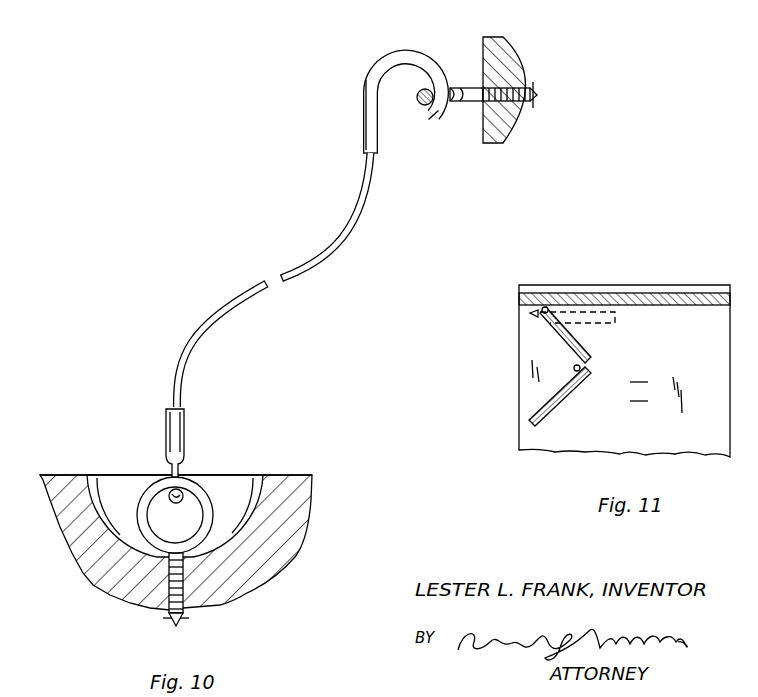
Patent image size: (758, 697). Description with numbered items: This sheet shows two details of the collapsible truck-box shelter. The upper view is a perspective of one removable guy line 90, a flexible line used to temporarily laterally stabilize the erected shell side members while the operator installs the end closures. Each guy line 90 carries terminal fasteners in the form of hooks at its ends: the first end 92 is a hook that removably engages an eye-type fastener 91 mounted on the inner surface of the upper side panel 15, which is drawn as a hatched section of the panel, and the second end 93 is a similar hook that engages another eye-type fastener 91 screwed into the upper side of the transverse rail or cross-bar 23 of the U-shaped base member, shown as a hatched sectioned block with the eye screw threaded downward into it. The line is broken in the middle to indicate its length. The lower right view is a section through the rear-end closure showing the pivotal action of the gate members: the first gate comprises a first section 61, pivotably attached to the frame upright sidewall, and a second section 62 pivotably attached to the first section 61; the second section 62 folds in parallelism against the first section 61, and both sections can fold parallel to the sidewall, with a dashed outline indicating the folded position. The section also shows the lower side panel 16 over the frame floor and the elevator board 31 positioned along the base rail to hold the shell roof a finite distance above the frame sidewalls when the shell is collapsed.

In FIG. 10, the upper side panel 15 is at (483, 41).
In FIG. 11, the lower side panel 16 is at (702, 293).
In FIG. 10, the transverse rail 23 is at (298, 475).
In FIG. 11, the elongate board 31 is at (628, 285).
In FIG. 11, the first section 61 is at (615, 310).
In FIG. 11, the second section 62 is at (602, 325).
In FIG. 10, the guy line 90 is at (236, 285).
In FIG. 10, the eye-type fastener 91 is at (203, 483).
In FIG. 10, the first end 92 is at (400, 52).
In FIG. 10, the second end 93 is at (187, 432).